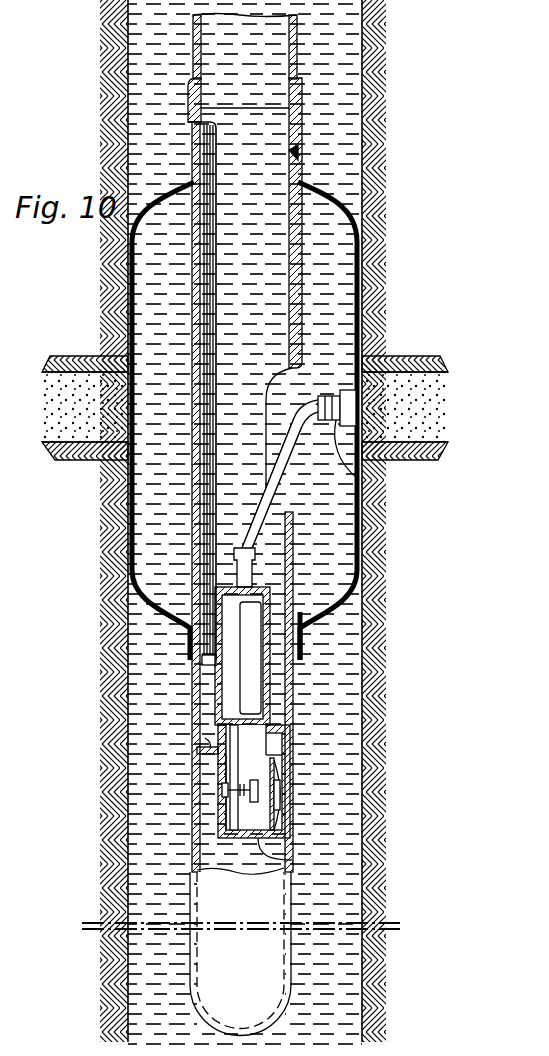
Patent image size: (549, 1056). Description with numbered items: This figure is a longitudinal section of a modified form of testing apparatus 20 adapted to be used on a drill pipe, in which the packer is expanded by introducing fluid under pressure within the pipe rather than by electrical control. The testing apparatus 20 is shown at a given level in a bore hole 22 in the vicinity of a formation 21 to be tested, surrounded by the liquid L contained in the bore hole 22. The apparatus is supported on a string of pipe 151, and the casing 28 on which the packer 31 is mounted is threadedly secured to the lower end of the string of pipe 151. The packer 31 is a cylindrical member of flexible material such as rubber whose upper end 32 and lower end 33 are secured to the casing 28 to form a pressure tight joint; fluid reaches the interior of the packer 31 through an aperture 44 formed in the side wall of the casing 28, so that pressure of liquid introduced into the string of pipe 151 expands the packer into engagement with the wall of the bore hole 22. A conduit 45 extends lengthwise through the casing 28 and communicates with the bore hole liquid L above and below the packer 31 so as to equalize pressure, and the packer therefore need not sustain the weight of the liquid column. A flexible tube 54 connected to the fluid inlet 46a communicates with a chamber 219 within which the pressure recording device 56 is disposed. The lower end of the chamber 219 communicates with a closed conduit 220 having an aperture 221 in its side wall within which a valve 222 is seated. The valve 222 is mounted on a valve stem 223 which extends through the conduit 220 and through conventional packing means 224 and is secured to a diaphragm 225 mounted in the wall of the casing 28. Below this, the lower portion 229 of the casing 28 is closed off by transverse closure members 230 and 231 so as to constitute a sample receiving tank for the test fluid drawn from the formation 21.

The string of pipe 151 is at (292, 44).
The bore hole 22 is at (370, 80).
The liquid L is at (346, 114).
The upper end of packer 32 is at (300, 157).
The testing apparatus 20 is at (338, 186).
The packer 31 is at (362, 258).
The casing 28 is at (294, 304).
The aperture 44 is at (290, 371).
The formation 21 is at (84, 395).
The fluid inlet 46a is at (280, 474).
The flexible tube 54 is at (300, 502).
The conduit 45 is at (206, 482).
The lower end of packer 33 is at (302, 650).
The pressure recording device 56 is at (292, 690).
The chamber 219 is at (228, 700).
The transverse closure member 230 is at (128, 716).
The closed conduit 220 is at (230, 762).
The valve 222 is at (222, 787).
The aperture 221 is at (225, 793).
The valve stem 223 is at (290, 772).
The diaphragm 225 is at (300, 806).
The packing means 224 is at (300, 828).
The transverse closure member 231 is at (293, 858).
The lower portion of casing 229 is at (290, 896).